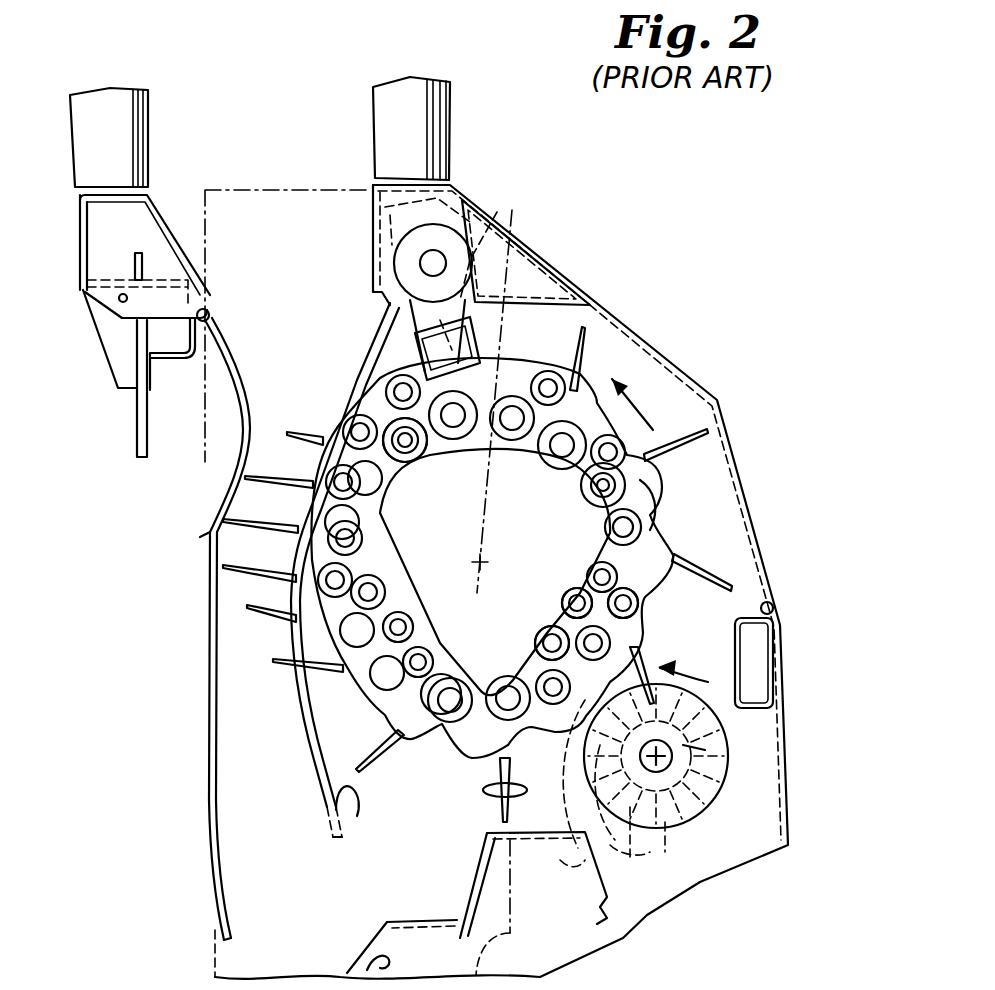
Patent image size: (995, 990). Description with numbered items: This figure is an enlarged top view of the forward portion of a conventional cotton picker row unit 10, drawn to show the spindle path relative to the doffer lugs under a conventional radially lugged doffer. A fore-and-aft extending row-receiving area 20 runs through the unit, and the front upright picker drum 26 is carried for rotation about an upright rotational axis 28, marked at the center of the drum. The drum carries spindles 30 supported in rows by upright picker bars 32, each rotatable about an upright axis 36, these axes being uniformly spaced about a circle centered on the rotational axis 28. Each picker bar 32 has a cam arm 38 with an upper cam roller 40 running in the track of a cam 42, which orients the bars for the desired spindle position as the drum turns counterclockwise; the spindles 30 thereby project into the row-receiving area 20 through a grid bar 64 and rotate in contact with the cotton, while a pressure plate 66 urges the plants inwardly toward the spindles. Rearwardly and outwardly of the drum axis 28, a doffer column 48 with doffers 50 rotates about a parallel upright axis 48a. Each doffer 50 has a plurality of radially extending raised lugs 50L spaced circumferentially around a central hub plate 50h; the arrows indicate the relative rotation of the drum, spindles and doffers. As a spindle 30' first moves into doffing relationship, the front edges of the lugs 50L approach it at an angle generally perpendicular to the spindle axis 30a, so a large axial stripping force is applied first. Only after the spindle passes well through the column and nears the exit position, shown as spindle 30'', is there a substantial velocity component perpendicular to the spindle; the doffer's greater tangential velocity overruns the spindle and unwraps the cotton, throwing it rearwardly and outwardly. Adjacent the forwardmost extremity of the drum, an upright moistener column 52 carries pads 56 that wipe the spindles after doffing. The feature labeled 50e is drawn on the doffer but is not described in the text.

The row unit 10 is at (580, 250).
The row-receiving area 20 is at (278, 175).
The front upright picker drum 26 is at (566, 376).
The rotational axis 28 is at (480, 562).
The spindles 30 is at (480, 562).
The spindle entering doffing relationship 30' is at (520, 784).
The spindle at doffer exit position 30'' is at (674, 662).
The spindle axis 30a is at (477, 906).
The picker bars 32 is at (658, 548).
The upright axes of picker bars 36 is at (407, 458).
The cam arm 38 is at (648, 627).
The upper cam roller 40 is at (534, 652).
The cam 42 is at (556, 612).
The doffer column 48 is at (736, 782).
The doffer column axis 48a is at (668, 767).
The doffers 50 is at (693, 820).
The central hub plate 50h is at (683, 747).
The radially extending raised lugs 50L is at (638, 865).
The end of guide 50e is at (555, 870).
The moistener column 52 is at (442, 239).
The pads 56 is at (380, 335).
The grid bar 64 is at (345, 390).
The pressure plate 66 is at (218, 489).